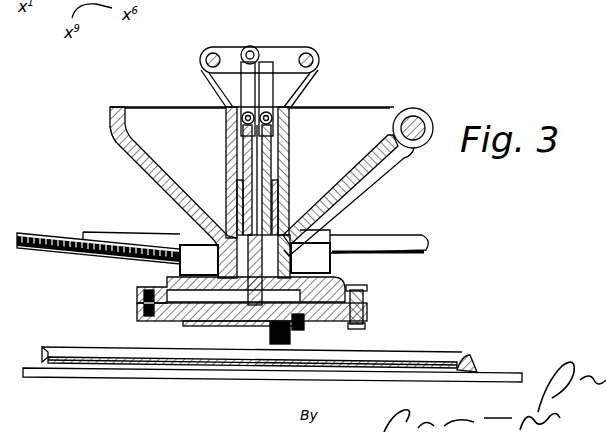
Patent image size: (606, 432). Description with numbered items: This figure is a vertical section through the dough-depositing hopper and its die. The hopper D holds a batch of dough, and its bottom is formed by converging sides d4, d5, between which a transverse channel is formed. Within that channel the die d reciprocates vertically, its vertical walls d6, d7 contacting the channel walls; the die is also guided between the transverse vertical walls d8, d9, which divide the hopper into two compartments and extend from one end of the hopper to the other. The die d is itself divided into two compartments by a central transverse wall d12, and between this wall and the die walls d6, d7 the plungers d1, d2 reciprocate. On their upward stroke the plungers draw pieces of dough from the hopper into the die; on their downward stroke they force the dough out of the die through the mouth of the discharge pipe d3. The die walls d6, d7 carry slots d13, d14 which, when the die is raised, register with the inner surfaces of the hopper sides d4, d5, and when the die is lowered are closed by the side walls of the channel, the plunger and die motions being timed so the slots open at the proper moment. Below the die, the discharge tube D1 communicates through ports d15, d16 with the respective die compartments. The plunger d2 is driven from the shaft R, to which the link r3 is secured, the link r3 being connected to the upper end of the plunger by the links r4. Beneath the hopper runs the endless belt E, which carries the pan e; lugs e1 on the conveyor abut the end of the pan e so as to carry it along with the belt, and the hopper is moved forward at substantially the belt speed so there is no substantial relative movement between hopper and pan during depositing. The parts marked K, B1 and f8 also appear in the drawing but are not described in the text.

The shaft R is at (211, 57).
The link r3 is at (240, 44).
The links r4 is at (269, 82).
The hopper D is at (360, 109).
The pivot eye K is at (420, 120).
The plunger d1 is at (238, 107).
The plunger d2 is at (288, 125).
The converging side d4 is at (160, 172).
The converging side d5 is at (374, 165).
The vertical wall of die d6 is at (238, 196).
The vertical wall of die d7 is at (277, 192).
The transverse vertical wall d8 is at (226, 152).
The transverse vertical wall d9 is at (289, 158).
The slot d13 is at (200, 247).
The slot d14 is at (322, 228).
The rack bar B1 is at (380, 245).
The rack teeth f8 is at (76, 260).
The die d is at (180, 278).
The discharge tube D1 is at (256, 294).
The central transverse wall d12 is at (163, 318).
The discharge pipe d3 is at (306, 333).
The port d15 is at (222, 328).
The port d16 is at (266, 344).
The endless belt E is at (488, 372).
The pan e is at (177, 366).
The lug e1 is at (472, 352).